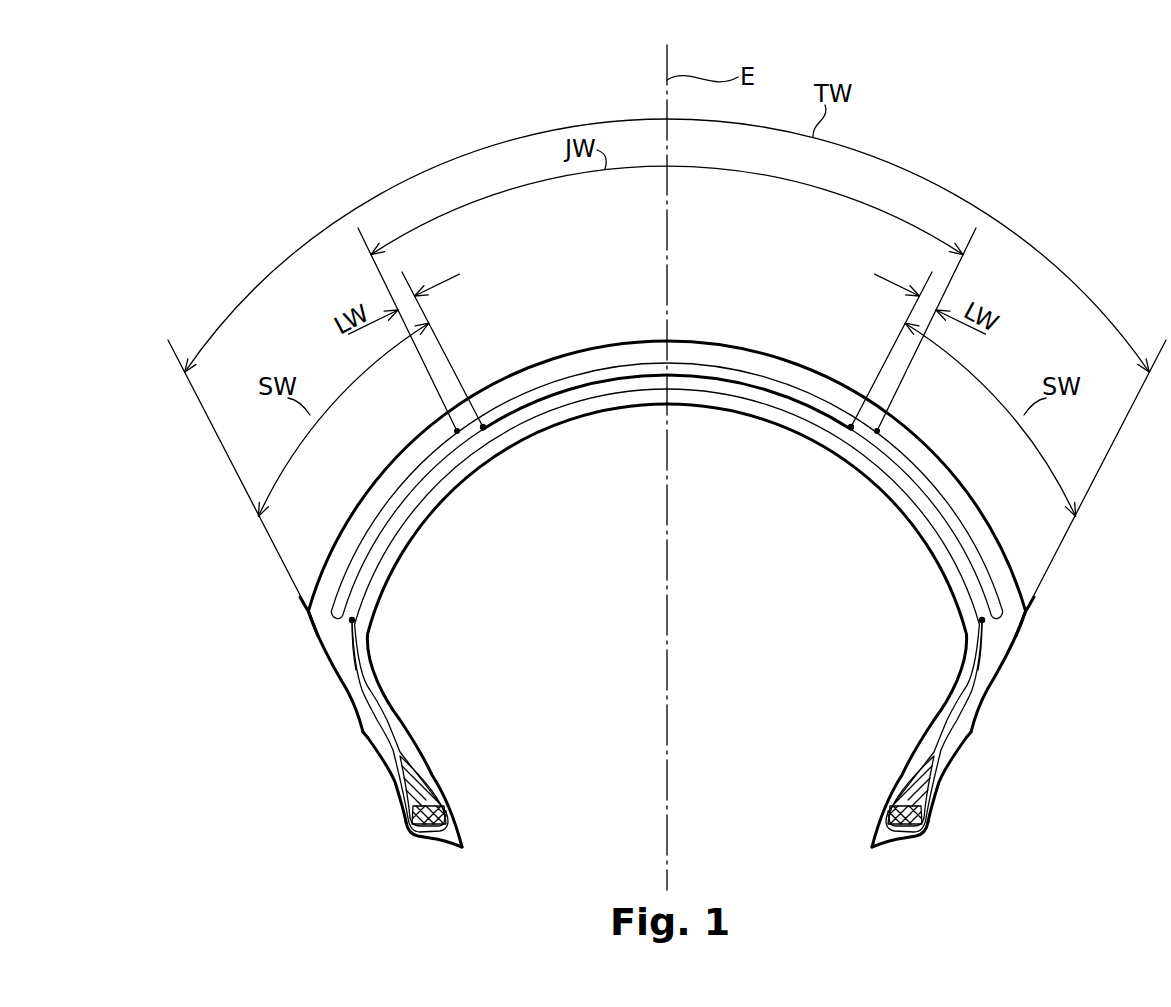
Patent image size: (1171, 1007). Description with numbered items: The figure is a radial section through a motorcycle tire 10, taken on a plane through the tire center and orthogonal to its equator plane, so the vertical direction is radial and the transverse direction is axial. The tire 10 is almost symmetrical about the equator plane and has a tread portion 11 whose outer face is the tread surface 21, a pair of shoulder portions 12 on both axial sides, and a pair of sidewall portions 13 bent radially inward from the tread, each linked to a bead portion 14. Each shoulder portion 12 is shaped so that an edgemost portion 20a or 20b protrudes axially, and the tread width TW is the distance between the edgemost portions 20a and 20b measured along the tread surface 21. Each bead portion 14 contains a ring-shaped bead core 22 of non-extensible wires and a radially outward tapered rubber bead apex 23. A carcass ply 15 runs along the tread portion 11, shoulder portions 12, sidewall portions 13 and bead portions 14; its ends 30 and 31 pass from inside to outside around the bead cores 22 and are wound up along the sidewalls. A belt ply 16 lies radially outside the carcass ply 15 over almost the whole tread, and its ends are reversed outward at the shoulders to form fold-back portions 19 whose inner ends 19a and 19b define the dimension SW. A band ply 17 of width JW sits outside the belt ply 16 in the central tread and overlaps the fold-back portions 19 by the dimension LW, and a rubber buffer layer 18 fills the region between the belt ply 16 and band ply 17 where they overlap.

The tire 10 is at (912, 158).
The tread portion 11 is at (620, 333).
The shoulder portion 12 is at (283, 597).
The sidewall portion 13 is at (345, 714).
The bead portion 14 is at (402, 845).
The carcass ply 15 is at (593, 402).
The belt ply 16 is at (710, 392).
The band ply 17 is at (742, 367).
The buffer layer 18 is at (790, 380).
The fold-back portion 19 is at (385, 512).
The end of the fold-back portion 19a is at (485, 432).
The end of the fold-back portion 19b is at (827, 483).
The edgemost portion 20a is at (306, 614).
The edgemost portion 20b is at (1072, 625).
The tread surface 21 is at (543, 352).
The bead core 22 is at (447, 813).
The bead apex 23 is at (423, 782).
The end of the carcass ply 30 is at (1032, 651).
The end of the carcass ply 31 is at (350, 640).